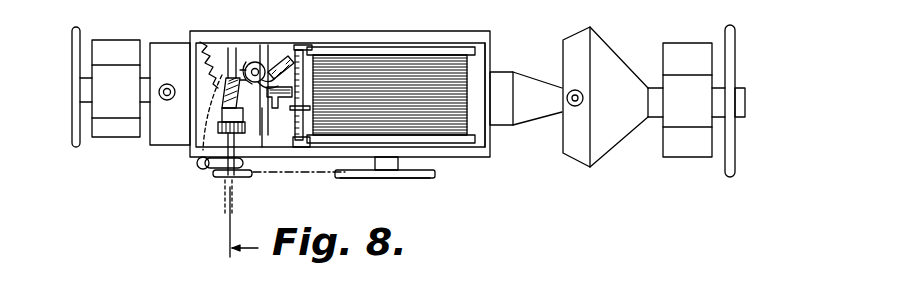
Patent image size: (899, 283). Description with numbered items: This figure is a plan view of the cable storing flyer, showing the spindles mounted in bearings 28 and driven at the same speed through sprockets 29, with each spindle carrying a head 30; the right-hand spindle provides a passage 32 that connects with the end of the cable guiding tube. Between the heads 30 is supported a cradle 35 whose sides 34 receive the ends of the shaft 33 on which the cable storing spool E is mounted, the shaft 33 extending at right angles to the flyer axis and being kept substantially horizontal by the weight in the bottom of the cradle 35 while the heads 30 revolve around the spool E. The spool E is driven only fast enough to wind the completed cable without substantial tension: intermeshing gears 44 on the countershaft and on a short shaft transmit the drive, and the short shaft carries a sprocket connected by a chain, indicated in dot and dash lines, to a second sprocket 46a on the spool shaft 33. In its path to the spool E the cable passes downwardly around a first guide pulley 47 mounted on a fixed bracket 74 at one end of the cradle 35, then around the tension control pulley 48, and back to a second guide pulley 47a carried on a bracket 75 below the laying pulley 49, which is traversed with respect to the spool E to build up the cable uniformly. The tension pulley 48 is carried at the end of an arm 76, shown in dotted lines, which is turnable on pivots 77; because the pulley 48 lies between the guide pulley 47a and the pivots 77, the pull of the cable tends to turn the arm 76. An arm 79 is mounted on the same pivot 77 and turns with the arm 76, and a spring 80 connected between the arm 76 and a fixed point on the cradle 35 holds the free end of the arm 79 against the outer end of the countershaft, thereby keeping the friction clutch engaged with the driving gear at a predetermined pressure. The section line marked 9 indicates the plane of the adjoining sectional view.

The bearings 28 is at (115, 103).
The sprockets 29 is at (82, 32).
The head 30 is at (608, 142).
The passage 32 is at (570, 93).
The shaft 33 is at (390, 168).
The sides 34 is at (335, 37).
The cradle 35 is at (482, 128).
The intermeshing gears 44 is at (220, 127).
The second sprocket 46a is at (433, 174).
The guide pulley 47 is at (283, 55).
The second guide pulley 47a is at (281, 110).
The tension control pulley 48 is at (252, 50).
The laying pulley 49 is at (287, 93).
The fixed bracket 74 is at (311, 50).
The bracket 75 is at (270, 110).
The arm 76 is at (236, 45).
The pivots 77 is at (203, 170).
The arm 79 is at (221, 205).
The spring 80 is at (208, 42).
The section line 9 is at (244, 226).
The cable storing spool E is at (405, 63).